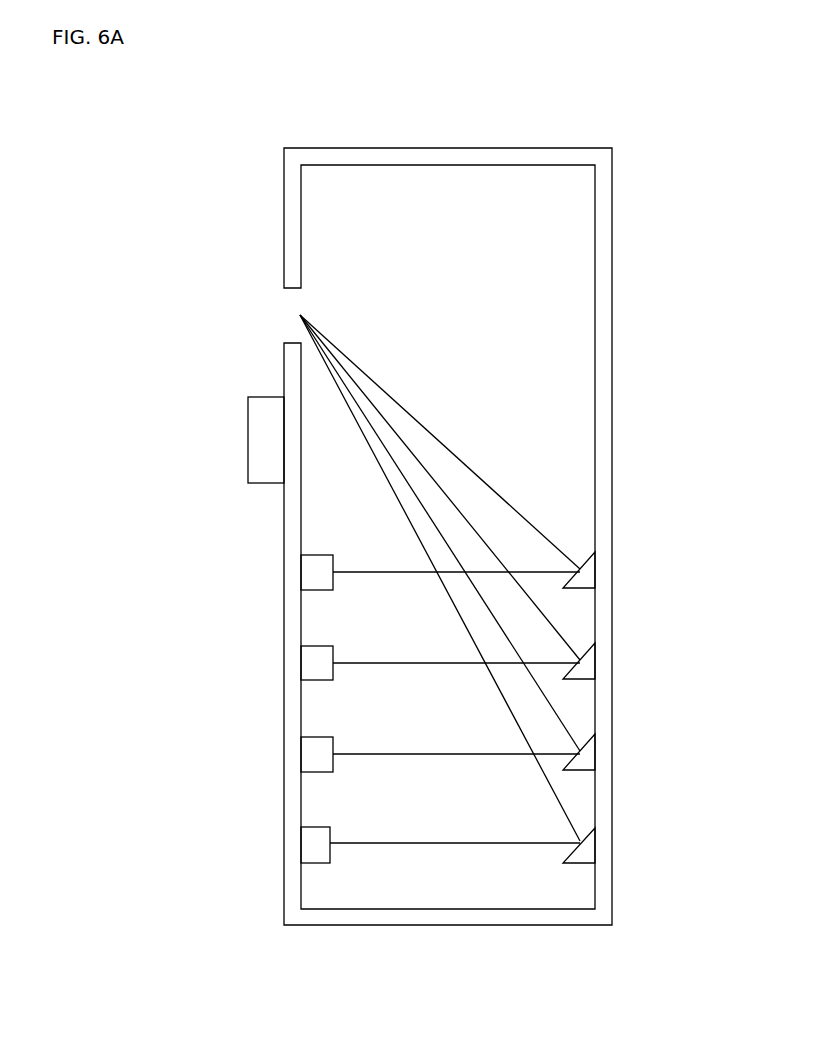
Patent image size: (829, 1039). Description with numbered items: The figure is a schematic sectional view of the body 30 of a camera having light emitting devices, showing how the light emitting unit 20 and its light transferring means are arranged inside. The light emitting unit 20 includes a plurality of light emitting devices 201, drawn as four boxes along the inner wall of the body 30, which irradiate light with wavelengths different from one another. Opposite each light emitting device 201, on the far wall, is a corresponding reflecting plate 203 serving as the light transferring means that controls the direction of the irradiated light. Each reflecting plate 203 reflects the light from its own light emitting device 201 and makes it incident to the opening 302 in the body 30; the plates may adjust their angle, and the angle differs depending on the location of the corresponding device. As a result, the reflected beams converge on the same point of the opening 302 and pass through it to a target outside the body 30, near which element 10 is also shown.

The housing 30 is at (520, 155).
The light source 10 is at (246, 442).
The aperture 302 is at (270, 313).
The detector module 20 is at (515, 980).
The light receiving element 201 is at (310, 572).
The reflector 203 is at (597, 584).